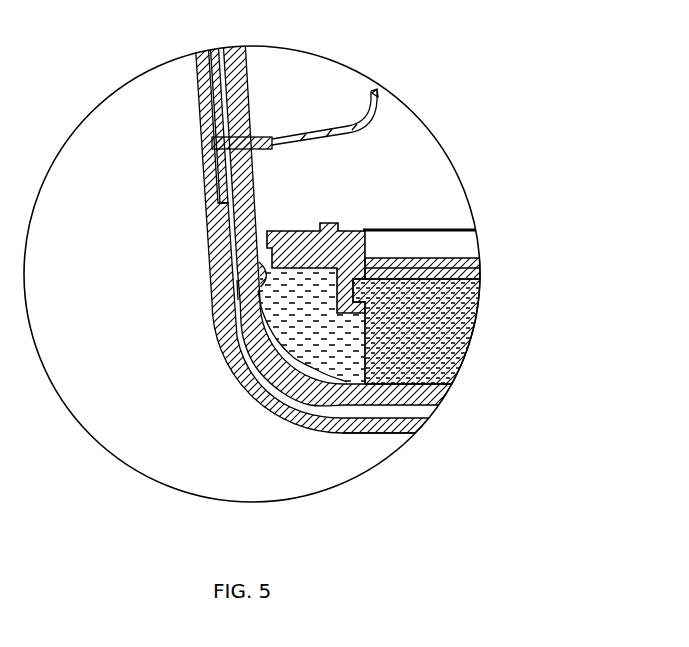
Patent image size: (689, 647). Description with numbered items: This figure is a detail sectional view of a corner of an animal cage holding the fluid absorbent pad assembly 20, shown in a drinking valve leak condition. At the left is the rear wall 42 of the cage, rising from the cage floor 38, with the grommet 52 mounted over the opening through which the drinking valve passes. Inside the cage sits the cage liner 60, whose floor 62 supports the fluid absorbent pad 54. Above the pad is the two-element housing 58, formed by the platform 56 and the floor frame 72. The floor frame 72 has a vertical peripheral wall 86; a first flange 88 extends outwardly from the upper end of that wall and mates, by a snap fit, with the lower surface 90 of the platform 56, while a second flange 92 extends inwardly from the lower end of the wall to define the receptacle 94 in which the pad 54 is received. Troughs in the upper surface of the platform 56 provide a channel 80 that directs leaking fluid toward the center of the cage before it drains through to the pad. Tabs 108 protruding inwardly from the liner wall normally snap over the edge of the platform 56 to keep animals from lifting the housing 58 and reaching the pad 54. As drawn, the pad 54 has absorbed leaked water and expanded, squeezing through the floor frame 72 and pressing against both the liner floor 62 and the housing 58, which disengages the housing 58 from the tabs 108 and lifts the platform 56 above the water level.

The fluid absorbent pad assembly 20 is at (463, 105).
The floor 38 is at (377, 431).
The rear wall 42 is at (207, 220).
The grommet 52 is at (334, 128).
The fluid absorbent pad 54 is at (458, 310).
The platform 56 is at (450, 257).
The housing 58 is at (347, 193).
The cage liner 60 is at (292, 52).
The floor 62 is at (433, 398).
The floor frame 72 is at (258, 265).
The channel 80 is at (403, 226).
The vertical peripheral wall 86 is at (297, 367).
The first flange 88 is at (305, 270).
The lower surface 90 is at (294, 252).
The second flange 92 is at (262, 410).
The receptacle 94 is at (498, 341).
The tabs 108 is at (232, 301).